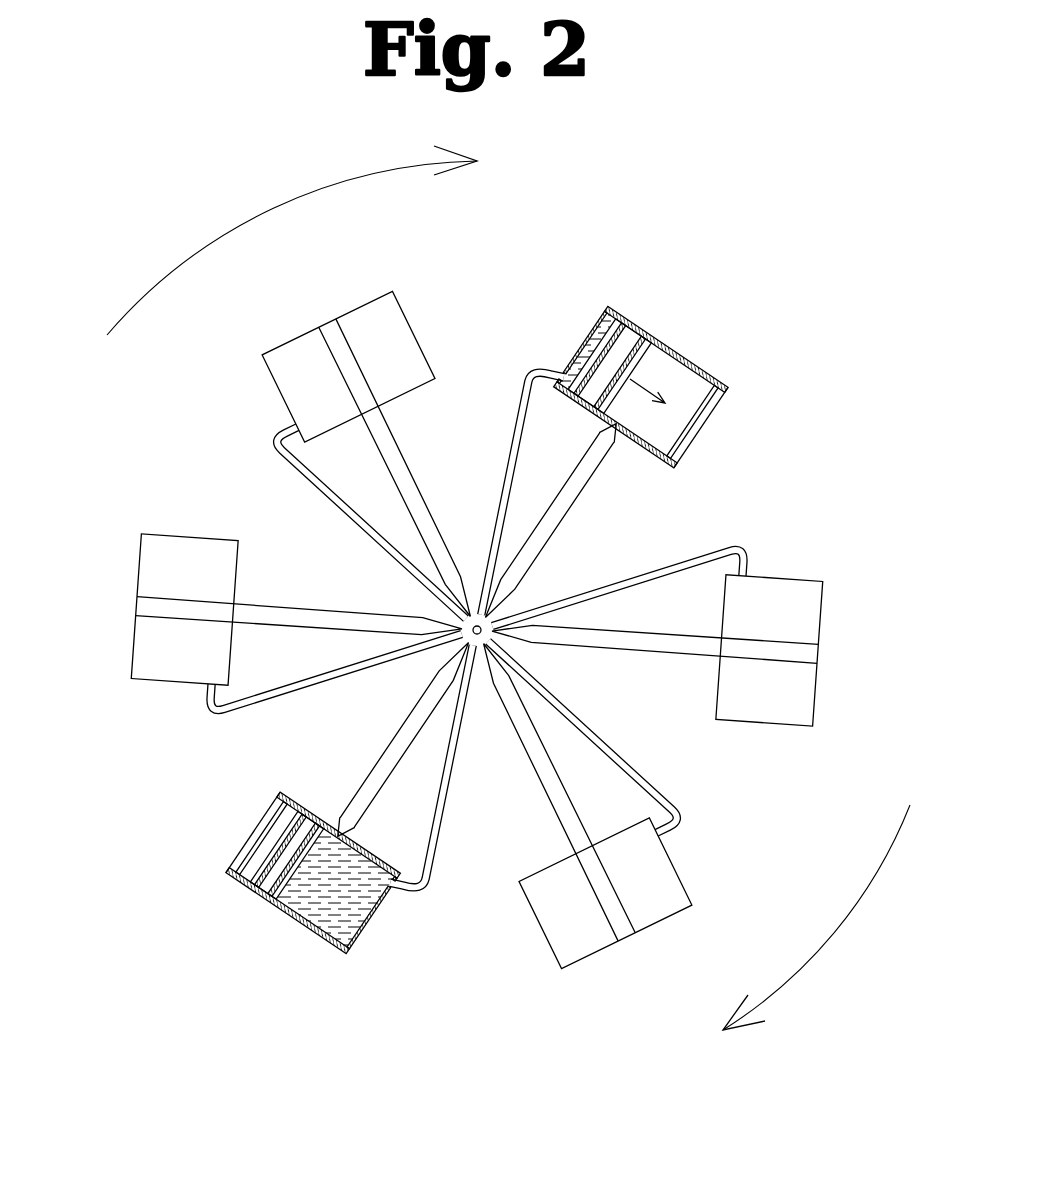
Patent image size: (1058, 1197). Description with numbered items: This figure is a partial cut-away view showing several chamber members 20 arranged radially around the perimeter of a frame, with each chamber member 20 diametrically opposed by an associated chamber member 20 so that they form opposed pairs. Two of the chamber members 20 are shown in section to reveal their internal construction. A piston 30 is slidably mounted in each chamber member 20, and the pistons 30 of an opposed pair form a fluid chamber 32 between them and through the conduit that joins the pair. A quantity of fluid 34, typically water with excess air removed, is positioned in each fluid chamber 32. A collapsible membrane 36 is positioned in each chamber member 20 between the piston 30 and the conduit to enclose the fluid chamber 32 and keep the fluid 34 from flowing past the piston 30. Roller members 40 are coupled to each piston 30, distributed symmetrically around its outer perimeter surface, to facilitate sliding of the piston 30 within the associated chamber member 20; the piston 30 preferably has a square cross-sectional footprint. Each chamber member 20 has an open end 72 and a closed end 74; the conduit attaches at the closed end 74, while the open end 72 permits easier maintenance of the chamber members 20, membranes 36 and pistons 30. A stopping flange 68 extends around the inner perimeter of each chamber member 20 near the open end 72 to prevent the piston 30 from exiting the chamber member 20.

The chamber member 20 is at (238, 868).
The piston 30 is at (640, 362).
The fluid chamber 32 is at (325, 913).
The fluid 34 is at (305, 892).
The collapsible membrane 36 is at (350, 902).
The roller member 40 is at (622, 325).
The stopping flange 68 is at (695, 415).
The open end 72 is at (700, 432).
The closed end 74 is at (572, 366).